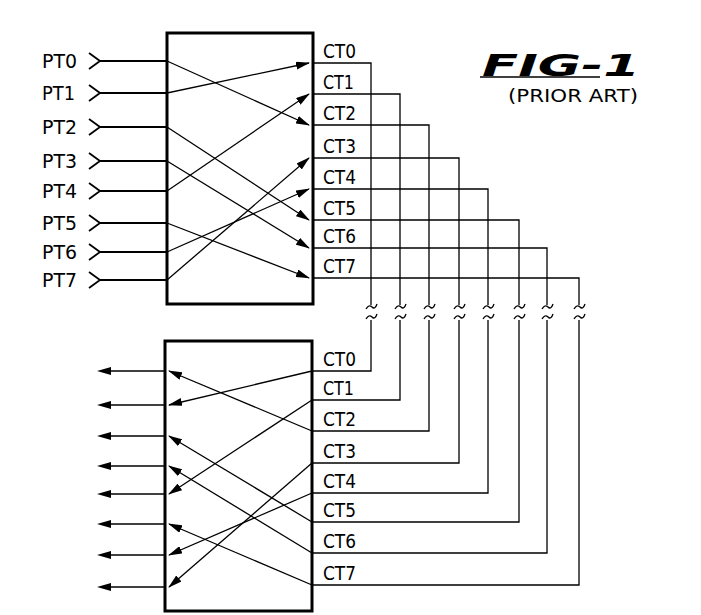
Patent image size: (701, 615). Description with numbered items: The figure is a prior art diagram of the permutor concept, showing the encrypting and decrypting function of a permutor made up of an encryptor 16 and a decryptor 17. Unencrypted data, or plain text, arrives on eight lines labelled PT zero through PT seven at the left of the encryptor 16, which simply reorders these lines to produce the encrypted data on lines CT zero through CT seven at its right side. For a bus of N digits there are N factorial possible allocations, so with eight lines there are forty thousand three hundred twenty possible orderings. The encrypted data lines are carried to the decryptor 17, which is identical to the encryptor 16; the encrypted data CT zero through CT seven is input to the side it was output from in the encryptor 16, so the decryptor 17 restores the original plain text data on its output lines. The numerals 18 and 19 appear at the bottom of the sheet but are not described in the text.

The encryptor 16 is at (271, 12).
The decryptor 17 is at (271, 320).
The plaintext output lines 18 is at (60, 611).
The ciphertext transmission lines 19 is at (586, 614).